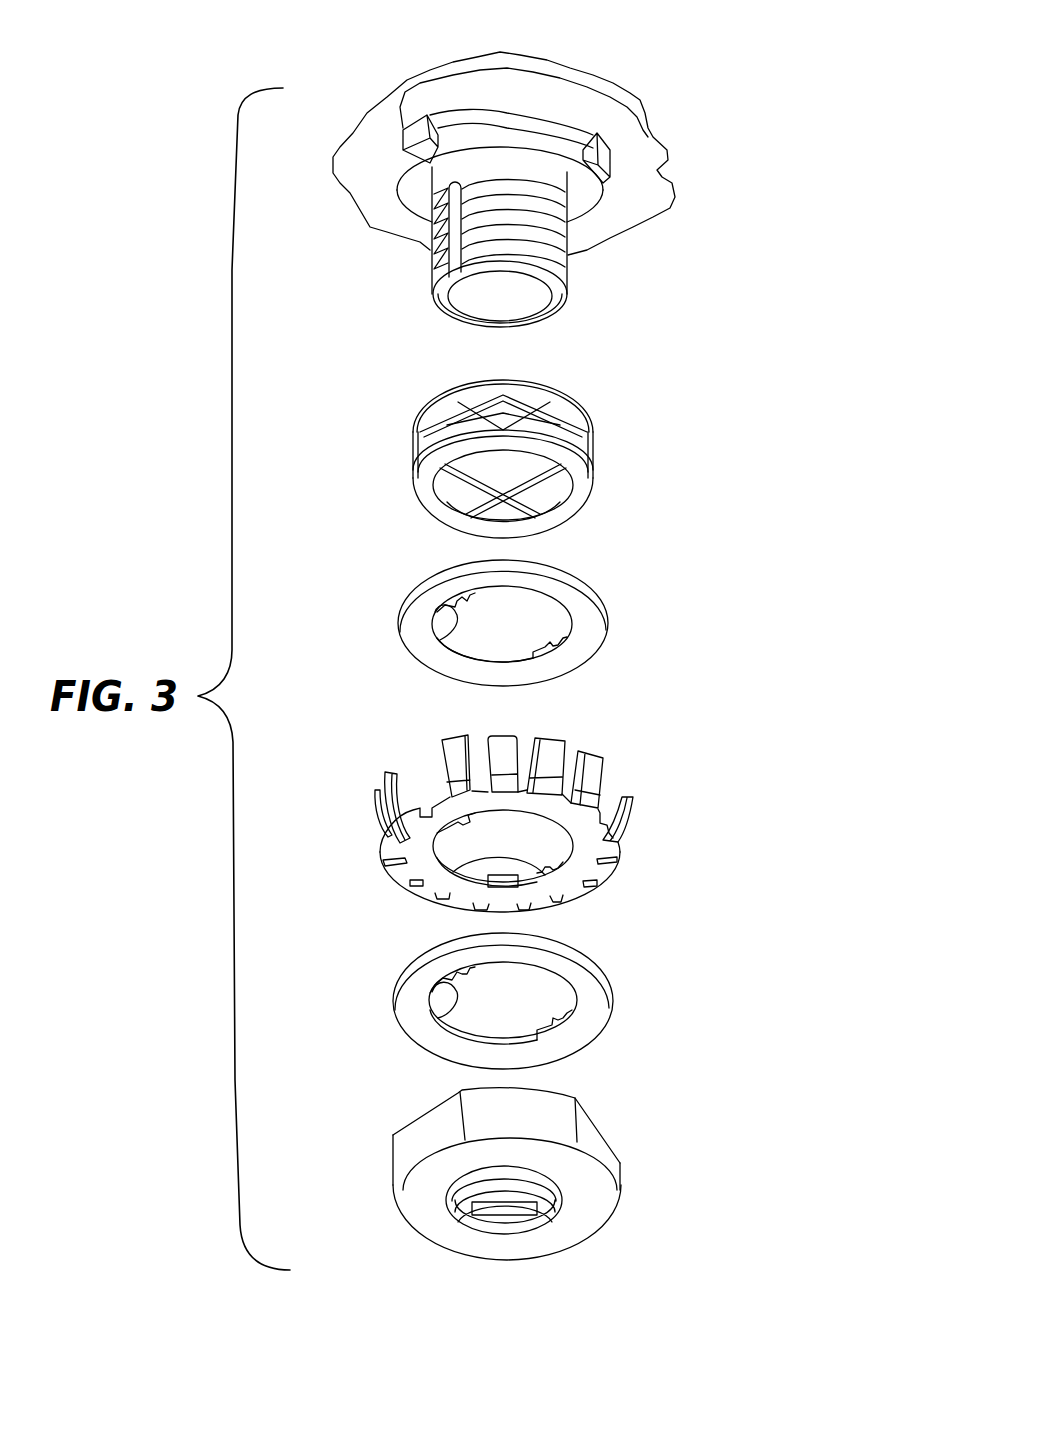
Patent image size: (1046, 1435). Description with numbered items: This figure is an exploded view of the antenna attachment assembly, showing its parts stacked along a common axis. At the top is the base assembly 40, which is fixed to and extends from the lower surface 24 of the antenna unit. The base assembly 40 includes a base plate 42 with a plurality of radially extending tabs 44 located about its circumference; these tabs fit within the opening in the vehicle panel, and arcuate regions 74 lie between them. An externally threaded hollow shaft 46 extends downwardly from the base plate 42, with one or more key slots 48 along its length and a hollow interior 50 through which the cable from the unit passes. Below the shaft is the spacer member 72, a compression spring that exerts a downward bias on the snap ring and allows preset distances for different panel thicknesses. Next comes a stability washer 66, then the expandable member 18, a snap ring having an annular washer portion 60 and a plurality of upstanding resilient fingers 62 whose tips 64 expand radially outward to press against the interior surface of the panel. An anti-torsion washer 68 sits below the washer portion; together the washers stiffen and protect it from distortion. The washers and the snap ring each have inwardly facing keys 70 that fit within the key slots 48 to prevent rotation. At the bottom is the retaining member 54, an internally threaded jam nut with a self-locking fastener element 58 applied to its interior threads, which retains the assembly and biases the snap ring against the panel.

The expandable member 18 is at (630, 810).
The lower surface 24 is at (646, 165).
The base assembly 40 is at (612, 265).
The base plate 42 is at (506, 135).
The radially extending tabs 44 is at (410, 136).
The externally threaded hollow shaft 46 is at (560, 263).
The key slots 48 is at (460, 260).
The hollow interior 50 is at (507, 300).
The retaining member 54 is at (600, 1158).
The self-locking fastener element 58 is at (528, 1212).
The annular washer portion 60 is at (563, 882).
The fingers 62 is at (588, 770).
The tips 64 is at (502, 732).
The stability washer 66 is at (590, 620).
The anti-torsion washer 68 is at (600, 1017).
The keys 70 is at (455, 612).
The spacer member 72 is at (580, 480).
The arcuate regions 74 is at (466, 119).